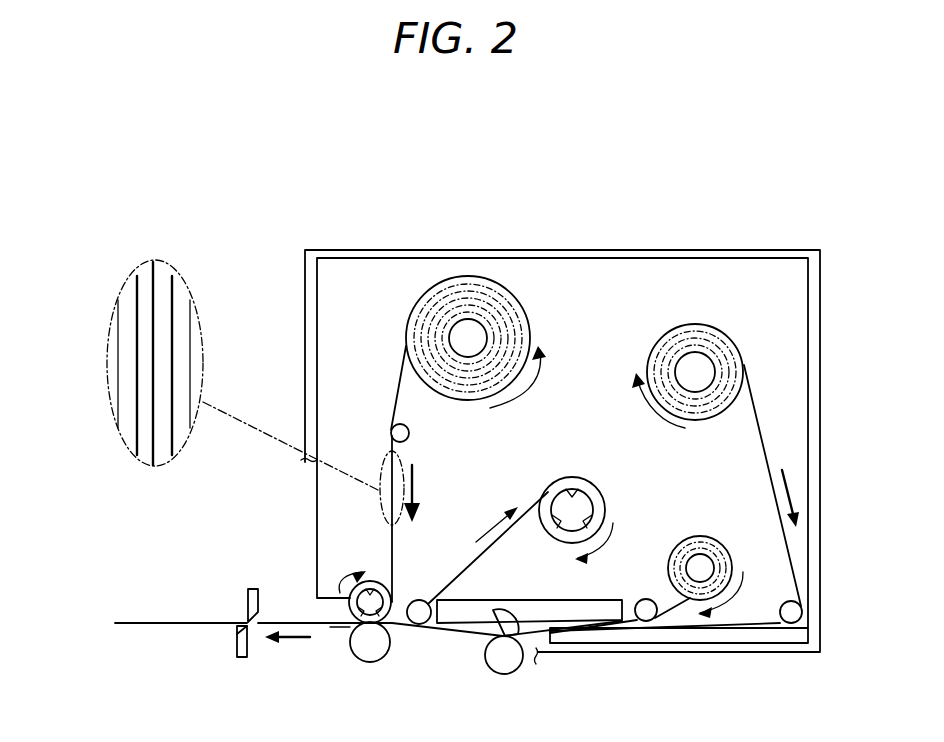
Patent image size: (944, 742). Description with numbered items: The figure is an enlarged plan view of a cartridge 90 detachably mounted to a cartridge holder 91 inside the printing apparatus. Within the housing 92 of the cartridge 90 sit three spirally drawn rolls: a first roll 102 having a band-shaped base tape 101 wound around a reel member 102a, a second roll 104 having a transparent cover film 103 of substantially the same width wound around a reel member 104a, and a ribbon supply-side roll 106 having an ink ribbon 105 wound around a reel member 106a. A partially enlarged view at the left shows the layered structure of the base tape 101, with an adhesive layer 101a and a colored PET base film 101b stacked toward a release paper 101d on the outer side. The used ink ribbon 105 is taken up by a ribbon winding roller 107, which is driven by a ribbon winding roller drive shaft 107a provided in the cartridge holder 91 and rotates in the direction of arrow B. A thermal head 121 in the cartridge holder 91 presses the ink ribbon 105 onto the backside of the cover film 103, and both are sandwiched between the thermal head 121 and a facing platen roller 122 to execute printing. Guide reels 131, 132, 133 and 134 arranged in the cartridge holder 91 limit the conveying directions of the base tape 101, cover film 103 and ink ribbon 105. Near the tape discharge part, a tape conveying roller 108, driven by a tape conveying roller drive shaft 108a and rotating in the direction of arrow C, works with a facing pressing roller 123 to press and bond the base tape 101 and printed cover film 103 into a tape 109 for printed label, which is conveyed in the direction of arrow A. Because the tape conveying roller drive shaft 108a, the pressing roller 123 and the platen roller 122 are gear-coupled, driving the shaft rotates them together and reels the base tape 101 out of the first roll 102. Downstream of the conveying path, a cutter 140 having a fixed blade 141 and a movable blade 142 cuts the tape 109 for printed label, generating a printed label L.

The cartridge 90 is at (304, 281).
The cartridge holder 91 is at (313, 317).
The housing 92 is at (305, 403).
The base tape 101 is at (397, 394).
The adhesive layer 101a is at (182, 442).
The base film 101b is at (162, 272).
The release paper 101d is at (142, 275).
The first roll 102 is at (533, 319).
The reel member 102a is at (460, 337).
The cover film 103 is at (757, 447).
The second roll 104 is at (733, 331).
The reel member 104a is at (685, 365).
The ink ribbon 105 is at (478, 562).
The ribbon supply-side roll 106 is at (709, 537).
The reel member 106a is at (692, 560).
The ribbon winding roller 107 is at (573, 478).
The ribbon winding roller drive shaft 107a is at (566, 504).
The tape conveying roller 108 is at (374, 580).
The tape conveying roller drive shaft 108a is at (352, 602).
The tape for printed label 109 is at (330, 628).
The thermal head 121 is at (500, 612).
The platen roller 122 is at (496, 655).
The pressing roller 123 is at (372, 656).
The guide reel 131 is at (410, 434).
The guide reel 132 is at (786, 606).
The guide reel 133 is at (640, 604).
The guide reel 134 is at (418, 600).
The cutter 140 is at (216, 634).
The fixed blade 141 is at (253, 590).
The movable blade 142 is at (243, 660).
The printed label L is at (180, 621).
The arrow A is at (287, 651).
The arrow B is at (598, 544).
The arrow C is at (349, 579).